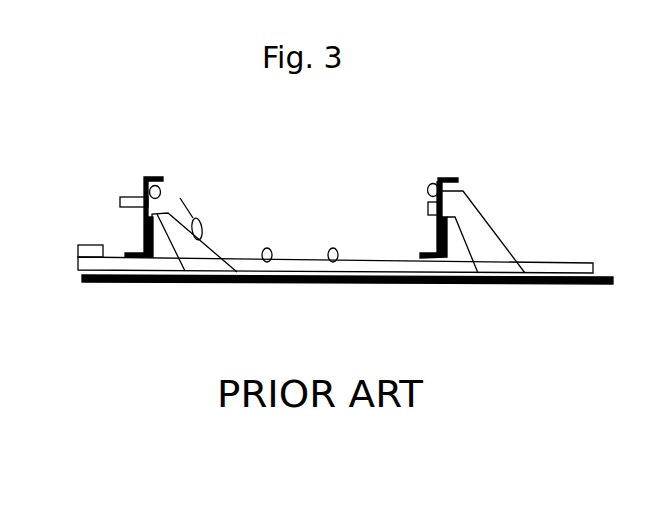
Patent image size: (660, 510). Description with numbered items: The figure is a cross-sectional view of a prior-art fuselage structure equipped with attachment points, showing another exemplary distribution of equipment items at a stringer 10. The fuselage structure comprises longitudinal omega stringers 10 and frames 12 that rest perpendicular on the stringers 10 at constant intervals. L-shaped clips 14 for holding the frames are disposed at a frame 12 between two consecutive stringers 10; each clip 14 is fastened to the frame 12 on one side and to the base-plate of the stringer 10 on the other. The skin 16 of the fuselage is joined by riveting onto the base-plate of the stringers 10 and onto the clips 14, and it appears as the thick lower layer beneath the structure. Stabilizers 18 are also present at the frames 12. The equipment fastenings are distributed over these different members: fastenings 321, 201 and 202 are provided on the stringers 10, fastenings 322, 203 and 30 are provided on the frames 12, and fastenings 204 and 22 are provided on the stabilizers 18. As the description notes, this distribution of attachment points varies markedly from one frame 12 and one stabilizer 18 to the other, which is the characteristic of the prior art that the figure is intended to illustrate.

The omega stringer 10 is at (573, 265).
The frame 12 is at (145, 178).
The L-shaped clip 14 is at (152, 243).
The skin 16 is at (395, 284).
The stabilizer 18 is at (173, 211).
The fastening 22 is at (202, 221).
The fastening 30 is at (427, 208).
The fastening 201 is at (268, 248).
The fastening 202 is at (334, 248).
The fastening 203 is at (427, 189).
The fastening 204 is at (161, 191).
The fastening 321 is at (90, 248).
The fastening 322 is at (128, 200).